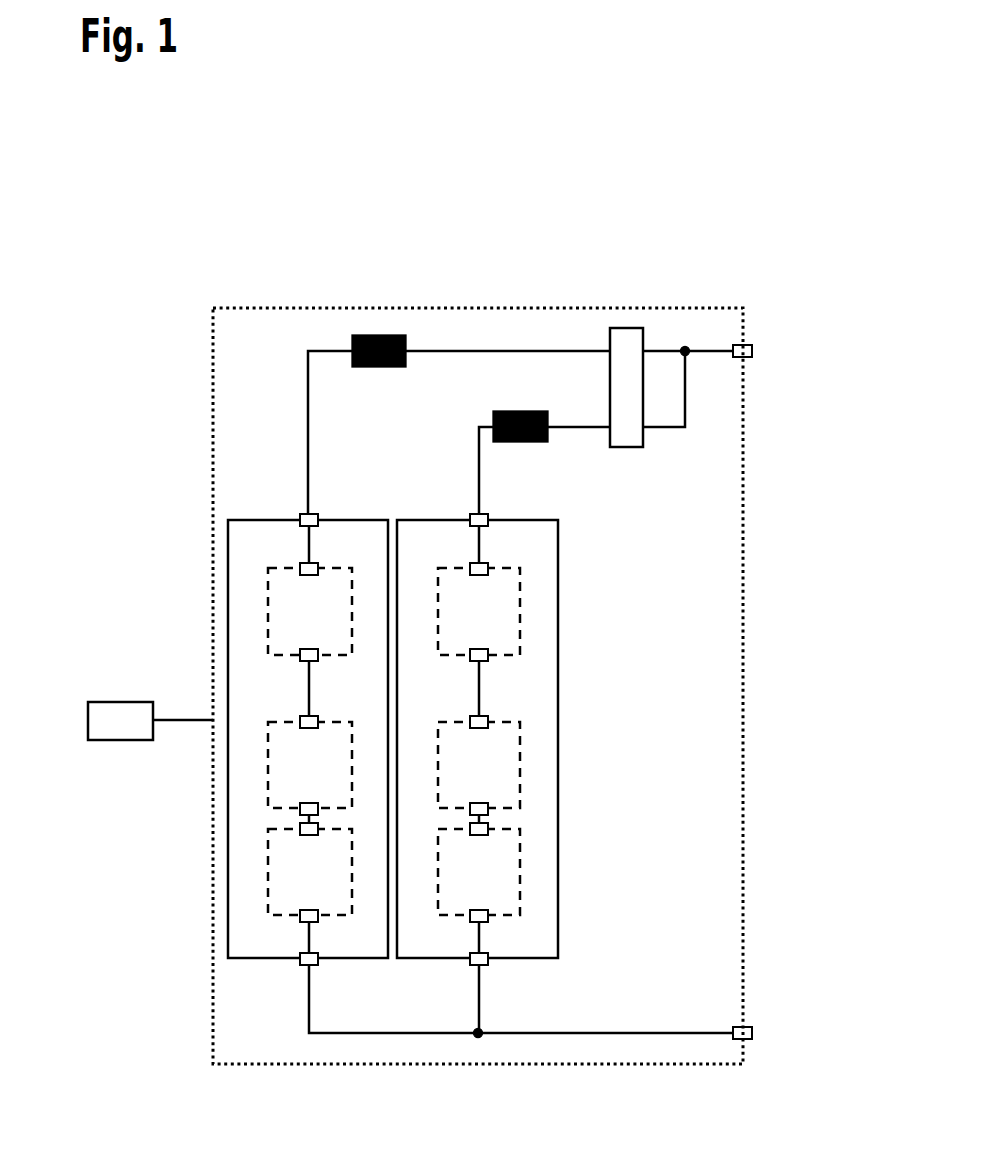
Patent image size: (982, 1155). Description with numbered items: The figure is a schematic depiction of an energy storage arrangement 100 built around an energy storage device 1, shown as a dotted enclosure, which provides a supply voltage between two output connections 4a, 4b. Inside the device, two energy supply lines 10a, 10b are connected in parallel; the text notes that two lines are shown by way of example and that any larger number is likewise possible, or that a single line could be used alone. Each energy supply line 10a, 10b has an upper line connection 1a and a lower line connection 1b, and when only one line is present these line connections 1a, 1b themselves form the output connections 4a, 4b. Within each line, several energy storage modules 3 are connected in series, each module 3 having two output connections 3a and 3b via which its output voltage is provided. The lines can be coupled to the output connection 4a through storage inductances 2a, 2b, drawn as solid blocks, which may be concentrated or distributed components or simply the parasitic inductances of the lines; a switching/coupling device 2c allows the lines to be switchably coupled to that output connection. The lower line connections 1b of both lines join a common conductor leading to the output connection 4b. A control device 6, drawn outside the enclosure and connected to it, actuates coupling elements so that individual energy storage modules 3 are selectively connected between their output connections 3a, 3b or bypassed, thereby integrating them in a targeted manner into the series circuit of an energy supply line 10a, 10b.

The battery system 100 is at (152, 265).
The energy storage device 1 is at (332, 305).
The storage inductance 2a is at (380, 368).
The storage inductance 2b is at (520, 410).
The switching/coupling device 2c is at (622, 385).
The output connection 4a is at (753, 351).
The output connection 4b is at (753, 1033).
The control device 6 is at (116, 710).
The energy supply line 10a is at (258, 520).
The energy supply line 10b is at (430, 520).
The line connection 1a is at (312, 521).
The line connection 1b is at (305, 960).
The energy storage module 3 is at (268, 601).
The output connection 3a is at (305, 568).
The output connection 3b is at (305, 657).